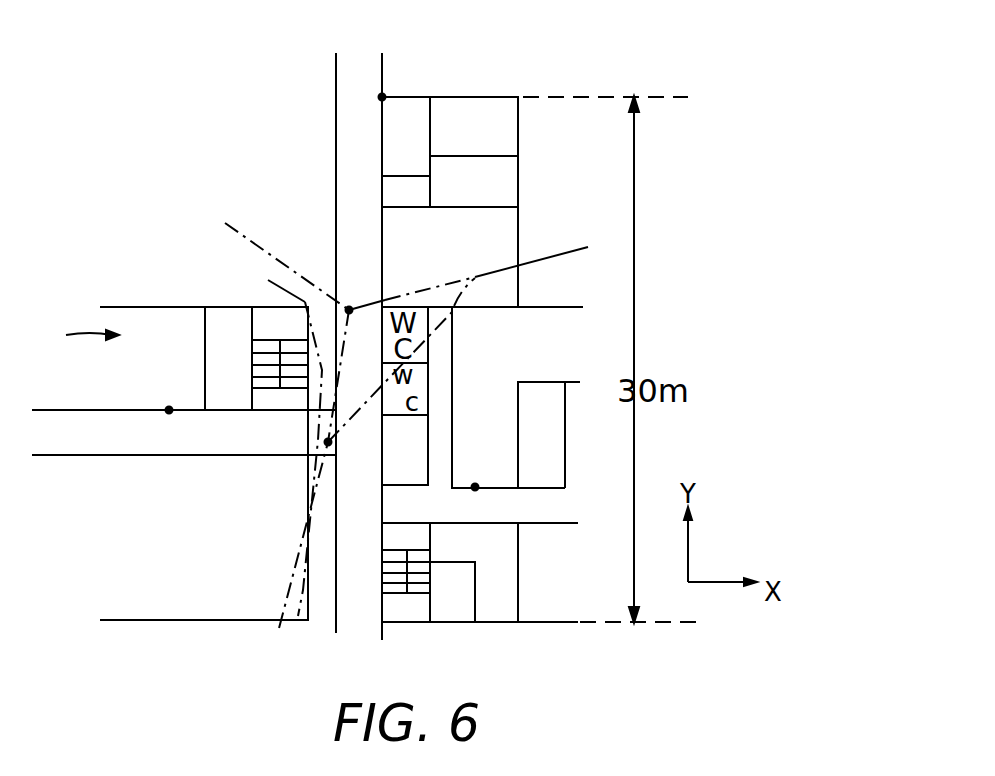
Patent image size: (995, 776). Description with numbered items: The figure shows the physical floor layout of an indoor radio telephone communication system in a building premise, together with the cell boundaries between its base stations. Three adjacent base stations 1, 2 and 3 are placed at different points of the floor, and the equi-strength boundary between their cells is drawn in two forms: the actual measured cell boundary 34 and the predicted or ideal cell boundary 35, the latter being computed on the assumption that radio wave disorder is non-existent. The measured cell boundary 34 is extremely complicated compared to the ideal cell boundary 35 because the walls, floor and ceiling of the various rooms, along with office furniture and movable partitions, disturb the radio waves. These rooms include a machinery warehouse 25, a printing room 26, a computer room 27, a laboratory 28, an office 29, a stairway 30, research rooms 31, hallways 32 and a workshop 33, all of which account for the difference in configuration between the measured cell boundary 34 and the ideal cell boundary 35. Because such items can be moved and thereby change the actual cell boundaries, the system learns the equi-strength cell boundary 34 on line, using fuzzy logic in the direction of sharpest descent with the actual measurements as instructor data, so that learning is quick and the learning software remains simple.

The base station 1 is at (475, 487).
The base station 2 is at (169, 410).
The base station 3 is at (382, 97).
The machinery warehouse 25 is at (217, 376).
The printing room 26 is at (71, 335).
The computer room 27 is at (505, 411).
The laboratory 28 is at (556, 422).
The office 29 is at (162, 534).
The stairway 30 is at (258, 344).
The research rooms 31 is at (477, 100).
The hallways 32 is at (346, 86).
The workshop 33 is at (328, 442).
The measured cell boundary 34 is at (276, 283).
The ideal cell boundary 35 is at (243, 234).